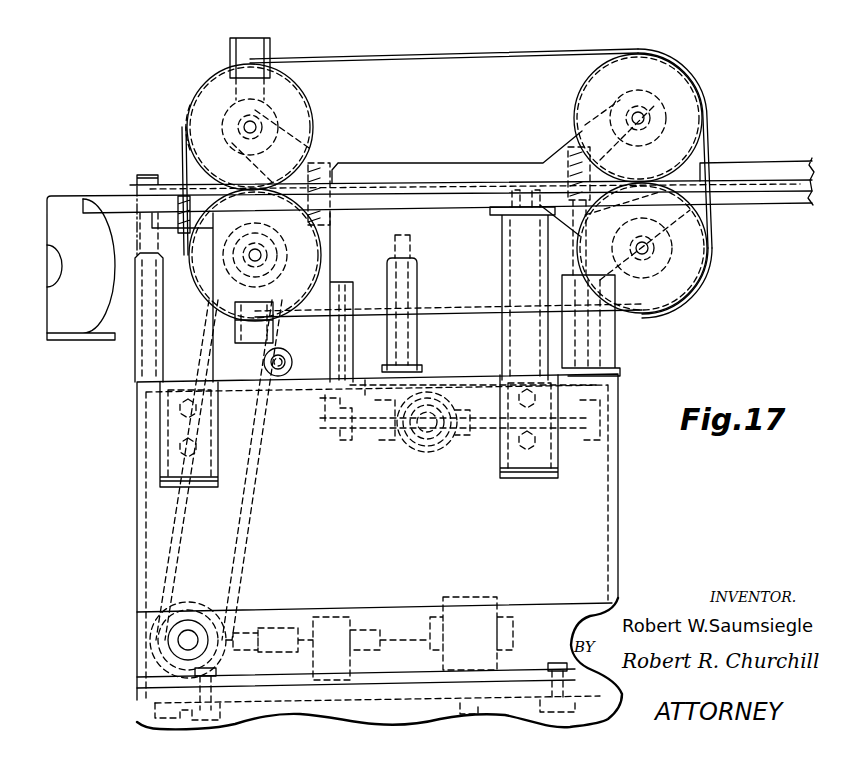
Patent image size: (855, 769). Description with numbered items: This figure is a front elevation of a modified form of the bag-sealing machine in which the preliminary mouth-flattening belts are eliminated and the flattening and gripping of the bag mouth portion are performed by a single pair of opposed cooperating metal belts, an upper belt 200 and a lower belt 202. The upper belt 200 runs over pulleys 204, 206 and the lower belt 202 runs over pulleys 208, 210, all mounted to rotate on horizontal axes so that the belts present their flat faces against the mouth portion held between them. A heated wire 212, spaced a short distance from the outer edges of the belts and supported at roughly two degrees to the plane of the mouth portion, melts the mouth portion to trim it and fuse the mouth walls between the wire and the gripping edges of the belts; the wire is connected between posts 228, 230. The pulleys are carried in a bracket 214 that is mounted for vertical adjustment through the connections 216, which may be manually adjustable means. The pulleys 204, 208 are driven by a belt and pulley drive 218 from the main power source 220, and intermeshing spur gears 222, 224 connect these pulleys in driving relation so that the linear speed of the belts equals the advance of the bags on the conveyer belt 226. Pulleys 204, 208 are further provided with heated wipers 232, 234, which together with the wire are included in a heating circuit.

The upper belt 200 is at (538, 55).
The lower belt 202 is at (445, 318).
The pulley 204 is at (212, 82).
The pulley 206 is at (685, 90).
The pulley 208 is at (300, 262).
The pulley 210 is at (693, 252).
The heated wire 212 is at (177, 182).
The bracket 214 is at (435, 160).
The connections 216 is at (392, 447).
The belt and pulley drive 218 is at (245, 513).
The main power source 220 is at (398, 600).
The spur gear 222 is at (186, 122).
The spur gear 224 is at (216, 318).
The conveyer belt 226 is at (707, 182).
The post 228 is at (138, 352).
The post 230 is at (417, 278).
The heated wiper 232 is at (253, 40).
The heated wiper 234 is at (253, 344).